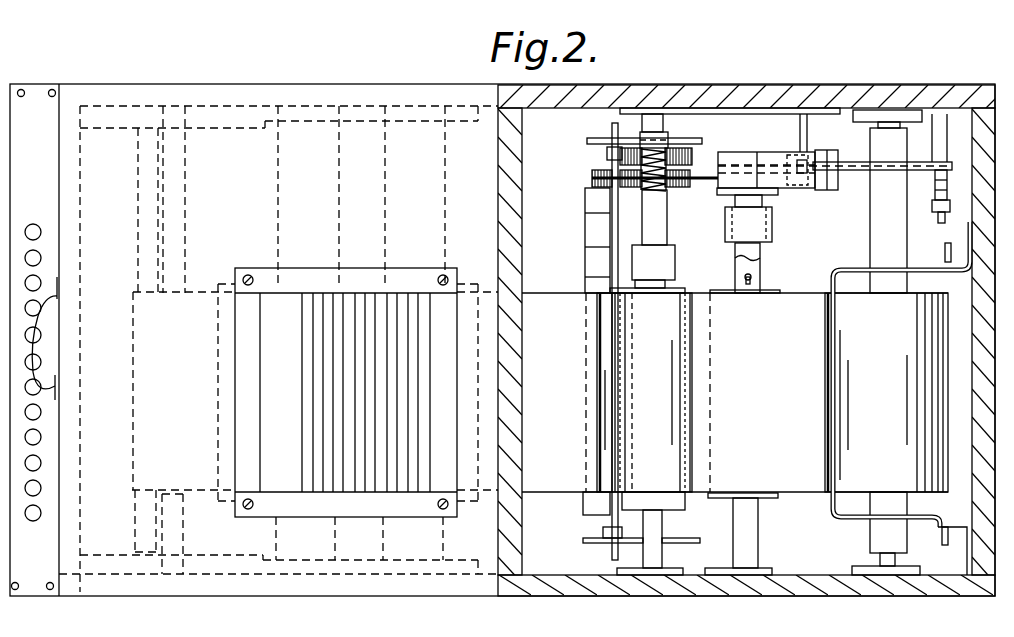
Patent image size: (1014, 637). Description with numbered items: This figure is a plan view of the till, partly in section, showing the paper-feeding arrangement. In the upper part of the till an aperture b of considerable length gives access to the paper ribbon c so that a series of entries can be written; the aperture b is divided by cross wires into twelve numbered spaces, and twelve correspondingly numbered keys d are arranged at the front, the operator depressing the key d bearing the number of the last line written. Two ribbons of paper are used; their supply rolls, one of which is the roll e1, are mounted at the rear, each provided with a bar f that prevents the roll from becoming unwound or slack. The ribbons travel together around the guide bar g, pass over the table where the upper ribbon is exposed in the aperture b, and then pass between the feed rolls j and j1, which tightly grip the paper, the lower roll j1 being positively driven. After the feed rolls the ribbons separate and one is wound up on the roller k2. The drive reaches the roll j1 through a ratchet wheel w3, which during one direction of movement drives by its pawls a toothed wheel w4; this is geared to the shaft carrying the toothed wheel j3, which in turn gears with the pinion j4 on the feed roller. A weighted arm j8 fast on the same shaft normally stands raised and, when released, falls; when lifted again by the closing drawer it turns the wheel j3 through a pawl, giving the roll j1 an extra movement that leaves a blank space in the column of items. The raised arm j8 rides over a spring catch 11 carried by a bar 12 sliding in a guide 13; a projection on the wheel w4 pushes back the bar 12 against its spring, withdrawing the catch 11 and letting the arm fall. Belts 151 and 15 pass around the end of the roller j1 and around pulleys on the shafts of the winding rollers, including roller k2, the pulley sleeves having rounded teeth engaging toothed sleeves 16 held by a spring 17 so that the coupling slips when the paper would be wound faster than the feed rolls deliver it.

The key d is at (35, 224).
The guide bar g is at (136, 258).
The aperture b is at (287, 302).
The paper ribbon c is at (735, 392).
The upper feed roll j is at (602, 352).
The lower feed roll j1 is at (585, 452).
The toothed wheel j3 is at (687, 190).
The pinion j4 is at (590, 178).
The weighted arm j8 is at (717, 124).
The winding roll k2 is at (673, 501).
The supply roll e1 is at (886, 342).
The bar f is at (895, 266).
The spring catch 11 is at (795, 143).
The bar 12 is at (855, 172).
The guide 13 is at (815, 110).
The belt 15 is at (598, 261).
The belt 151 is at (712, 232).
The sleeve 16 is at (652, 214).
The spring 17 is at (655, 193).
The ratchet wheel w3 is at (668, 150).
The toothed wheel w4 is at (693, 160).